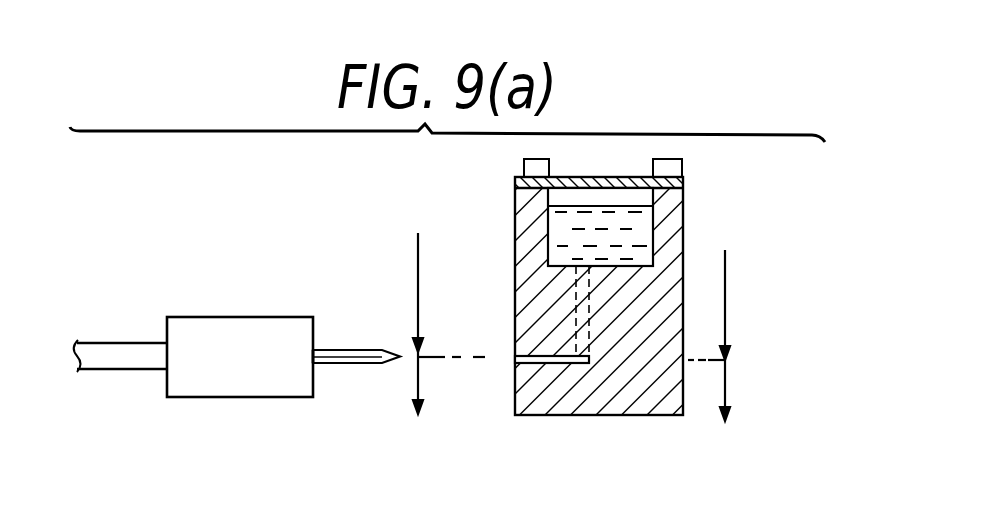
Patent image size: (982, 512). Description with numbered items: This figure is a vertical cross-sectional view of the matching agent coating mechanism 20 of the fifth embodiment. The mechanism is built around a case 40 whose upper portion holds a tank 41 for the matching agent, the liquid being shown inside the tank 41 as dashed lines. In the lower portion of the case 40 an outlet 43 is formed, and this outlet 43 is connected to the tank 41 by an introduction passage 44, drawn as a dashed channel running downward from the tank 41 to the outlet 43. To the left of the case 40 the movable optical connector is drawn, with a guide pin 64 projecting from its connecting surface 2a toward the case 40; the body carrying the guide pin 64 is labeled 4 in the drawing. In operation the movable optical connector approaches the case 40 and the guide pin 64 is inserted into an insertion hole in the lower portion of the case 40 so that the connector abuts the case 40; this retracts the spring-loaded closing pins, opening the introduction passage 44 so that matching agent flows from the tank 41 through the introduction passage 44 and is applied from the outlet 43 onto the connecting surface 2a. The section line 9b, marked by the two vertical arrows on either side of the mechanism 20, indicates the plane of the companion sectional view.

The syringe body / injector 4 is at (197, 388).
The connecting surface 2a is at (313, 378).
The guide pin 64 is at (362, 364).
The case 40 is at (632, 393).
The tank 41 is at (637, 241).
The outlet 43 is at (532, 354).
The introduction passage 44 is at (585, 310).
The matching agent coating mechanism 20 is at (712, 340).
The section line 9b is at (574, 327).